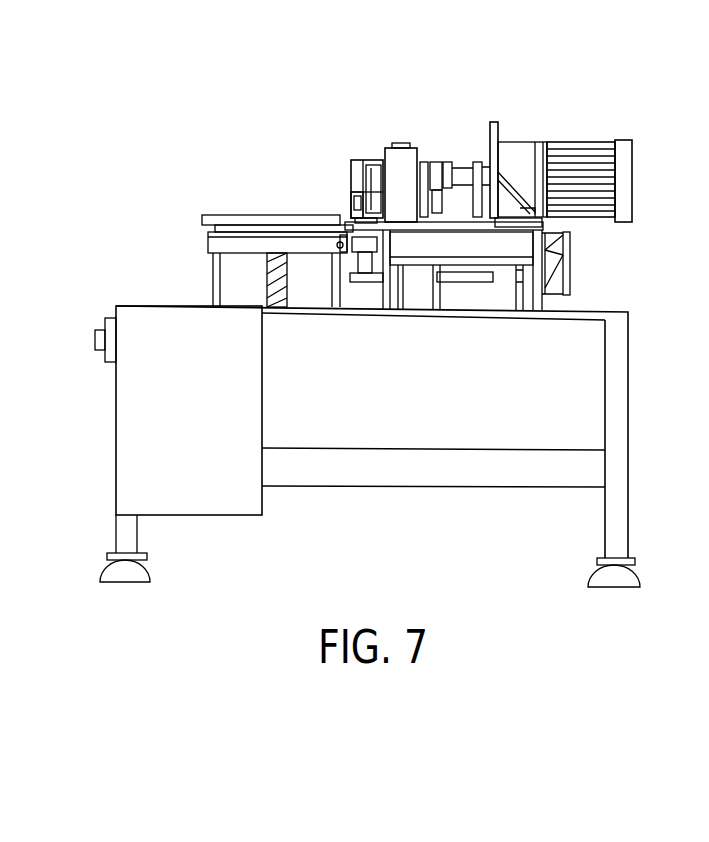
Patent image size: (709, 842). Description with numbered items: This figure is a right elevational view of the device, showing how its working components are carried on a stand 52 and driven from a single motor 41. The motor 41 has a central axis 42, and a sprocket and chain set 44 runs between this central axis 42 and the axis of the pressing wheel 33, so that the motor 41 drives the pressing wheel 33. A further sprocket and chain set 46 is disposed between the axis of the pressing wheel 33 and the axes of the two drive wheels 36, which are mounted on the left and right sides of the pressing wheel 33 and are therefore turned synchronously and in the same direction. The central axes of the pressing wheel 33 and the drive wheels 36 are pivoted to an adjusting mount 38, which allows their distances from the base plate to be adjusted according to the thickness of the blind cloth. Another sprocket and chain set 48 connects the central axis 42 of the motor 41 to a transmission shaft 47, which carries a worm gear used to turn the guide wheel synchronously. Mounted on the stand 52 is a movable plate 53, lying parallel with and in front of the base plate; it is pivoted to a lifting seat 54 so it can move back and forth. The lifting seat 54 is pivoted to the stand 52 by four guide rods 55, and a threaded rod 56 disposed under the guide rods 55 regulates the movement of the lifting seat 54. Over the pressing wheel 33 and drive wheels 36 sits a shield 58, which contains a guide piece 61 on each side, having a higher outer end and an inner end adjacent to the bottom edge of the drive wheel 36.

The pressing wheel 33 is at (373, 197).
The drive wheels 36 is at (368, 163).
The adjusting mount 38 is at (413, 143).
The motor 41 is at (607, 142).
The central axis of the motor 42 is at (498, 123).
The sprocket and chain set 44 is at (448, 162).
The sprocket and chain set 46 is at (436, 160).
The transmission shaft 47 is at (453, 279).
The sprocket and chain set 48 is at (482, 242).
The stand 52 is at (330, 405).
The movable plate 53 is at (208, 215).
The lifting seat 54 is at (208, 245).
The guide rods 55 is at (215, 285).
The threaded rod 56 is at (267, 295).
The shield 58 is at (350, 170).
The guide piece 61 is at (352, 193).